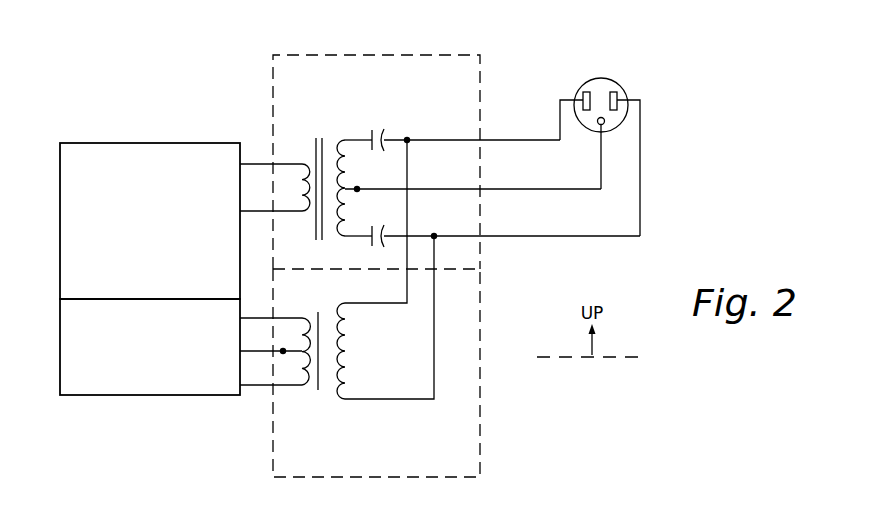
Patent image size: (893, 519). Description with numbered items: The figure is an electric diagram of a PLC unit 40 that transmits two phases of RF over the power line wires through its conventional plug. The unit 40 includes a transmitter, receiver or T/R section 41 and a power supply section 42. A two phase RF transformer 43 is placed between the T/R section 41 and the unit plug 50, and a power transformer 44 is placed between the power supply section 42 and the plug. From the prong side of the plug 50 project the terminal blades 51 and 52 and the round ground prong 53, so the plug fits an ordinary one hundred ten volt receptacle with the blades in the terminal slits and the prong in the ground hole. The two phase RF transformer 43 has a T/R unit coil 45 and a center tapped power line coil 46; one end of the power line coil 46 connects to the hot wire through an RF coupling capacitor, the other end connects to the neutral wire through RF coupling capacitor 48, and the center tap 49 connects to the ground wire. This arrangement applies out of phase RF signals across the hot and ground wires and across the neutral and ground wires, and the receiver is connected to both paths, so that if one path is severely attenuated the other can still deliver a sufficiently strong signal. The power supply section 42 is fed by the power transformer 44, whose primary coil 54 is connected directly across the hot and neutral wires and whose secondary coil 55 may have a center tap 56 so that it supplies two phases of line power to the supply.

The unit 40 is at (150, 289).
The transmitter, receiver or T/R section 41 is at (149, 143).
The power supply section 42 is at (141, 395).
The two phase RF transformer 43 is at (406, 162).
The power transformer 44 is at (386, 373).
The T/R unit coil 45 is at (296, 206).
The center tapped power line coil 46 is at (352, 170).
The RF coupling capacitor 48 is at (386, 133).
The center tap 49 is at (370, 243).
The plug 50 is at (598, 101).
The terminal blade 51 is at (621, 93).
The terminal blade 52 is at (581, 92).
The round ground prong 53 is at (597, 126).
The primary coil 54 is at (342, 345).
The secondary coil 55 is at (305, 326).
The center tap 56 is at (262, 355).